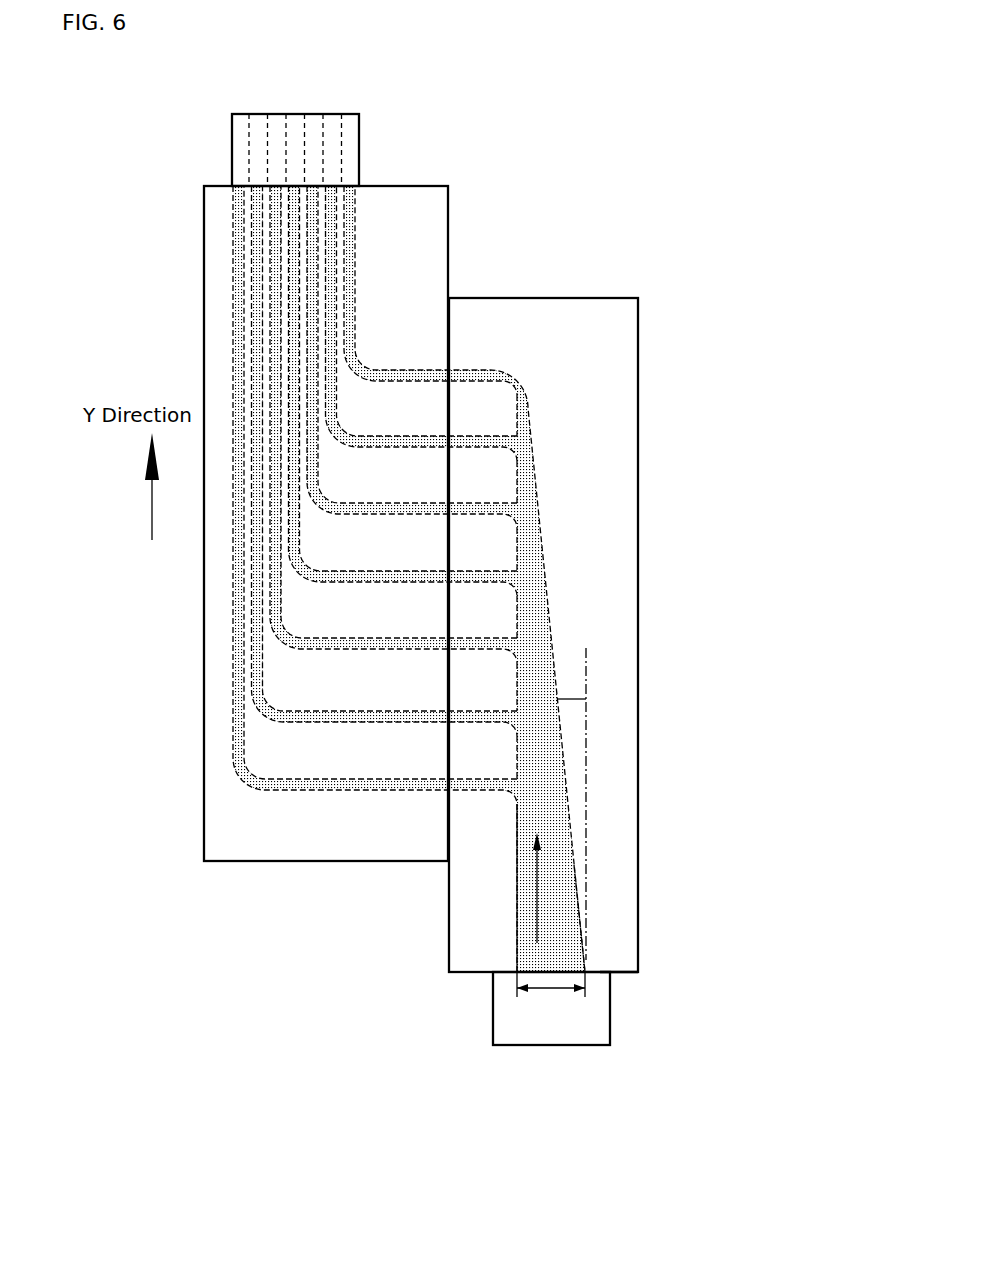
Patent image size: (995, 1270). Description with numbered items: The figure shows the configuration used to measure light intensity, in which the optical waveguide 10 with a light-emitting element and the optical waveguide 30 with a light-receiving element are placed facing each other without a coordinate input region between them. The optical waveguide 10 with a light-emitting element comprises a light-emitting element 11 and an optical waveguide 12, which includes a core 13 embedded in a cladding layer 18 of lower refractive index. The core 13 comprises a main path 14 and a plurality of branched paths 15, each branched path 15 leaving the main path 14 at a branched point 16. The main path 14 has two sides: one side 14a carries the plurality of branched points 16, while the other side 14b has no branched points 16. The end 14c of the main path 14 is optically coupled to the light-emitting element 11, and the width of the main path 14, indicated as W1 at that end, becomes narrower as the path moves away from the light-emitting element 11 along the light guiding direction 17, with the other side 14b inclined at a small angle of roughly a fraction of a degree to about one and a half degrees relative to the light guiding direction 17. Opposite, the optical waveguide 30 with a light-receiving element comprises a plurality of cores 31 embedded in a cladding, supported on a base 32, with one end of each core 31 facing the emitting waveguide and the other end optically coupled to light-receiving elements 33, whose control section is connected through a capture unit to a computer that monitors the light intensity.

The optical waveguide with a light-emitting element 10 is at (656, 263).
The light-emitting element 11 is at (610, 1046).
The optical waveguide 12 is at (640, 347).
The core 13 is at (549, 603).
The main path 14 is at (516, 935).
The one side of the main path 14a is at (516, 862).
The other side of the main path 14b is at (574, 865).
The end of the main path 14c is at (548, 974).
The branched path 15 is at (489, 369).
The branched point 16 is at (516, 449).
The light guiding direction 17 is at (536, 897).
The cladding layer 18 is at (613, 917).
The optical waveguide with a light-receiving element 30 is at (430, 141).
The core 31 is at (348, 792).
The substrate of array 32 is at (206, 186).
The light-receiving element 33 is at (232, 115).
The width of output waveguide W1 is at (551, 993).